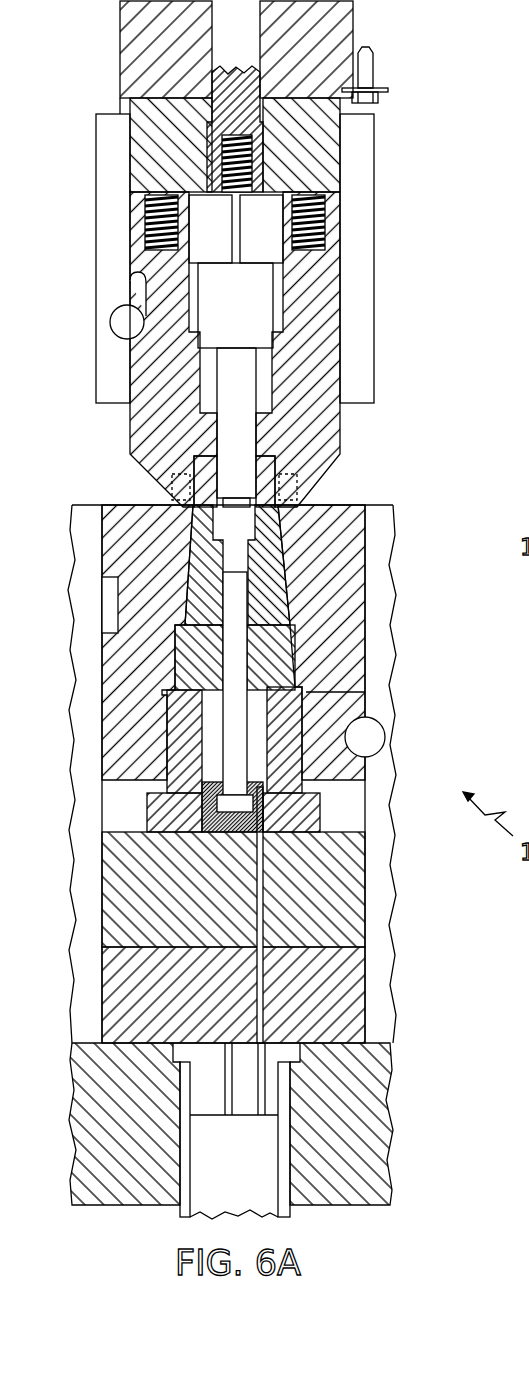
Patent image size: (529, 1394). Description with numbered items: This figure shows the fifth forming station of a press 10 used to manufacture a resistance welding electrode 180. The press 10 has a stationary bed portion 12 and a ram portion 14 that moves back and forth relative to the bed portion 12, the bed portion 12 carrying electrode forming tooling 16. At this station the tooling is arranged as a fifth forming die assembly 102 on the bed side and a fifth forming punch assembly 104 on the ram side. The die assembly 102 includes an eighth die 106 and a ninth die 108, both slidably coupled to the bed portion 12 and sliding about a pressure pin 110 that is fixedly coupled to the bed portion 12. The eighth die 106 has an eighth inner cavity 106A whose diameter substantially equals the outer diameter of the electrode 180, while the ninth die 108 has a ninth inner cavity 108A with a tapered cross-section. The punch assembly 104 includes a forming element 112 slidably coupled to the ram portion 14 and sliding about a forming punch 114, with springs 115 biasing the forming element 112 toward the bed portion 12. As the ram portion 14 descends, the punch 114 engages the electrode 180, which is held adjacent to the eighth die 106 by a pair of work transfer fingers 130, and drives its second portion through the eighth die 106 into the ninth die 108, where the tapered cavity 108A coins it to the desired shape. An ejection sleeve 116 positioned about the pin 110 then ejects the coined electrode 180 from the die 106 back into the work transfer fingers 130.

The press 10 is at (105, 469).
The bed portion 12 is at (97, 1193).
The ram portion 14 is at (107, 144).
The first electrode forming tooling 16 is at (426, 307).
The fifth forming die assembly 102 is at (412, 462).
The fifth forming punch assembly 104 is at (344, 264).
The eighth die 106 is at (199, 544).
The eighth inner cavity 106A is at (202, 525).
The ninth die 108 is at (265, 562).
The ninth inner cavity 108A is at (267, 574).
The pressure pin 110 is at (237, 677).
The forming element 112 is at (283, 448).
The forming punch 114 is at (229, 429).
The springs 115 is at (144, 232).
The ejection sleeve 116 is at (293, 787).
The work transfer fingers 130 is at (172, 491).
The resistance welding electrode 180 is at (324, 97).